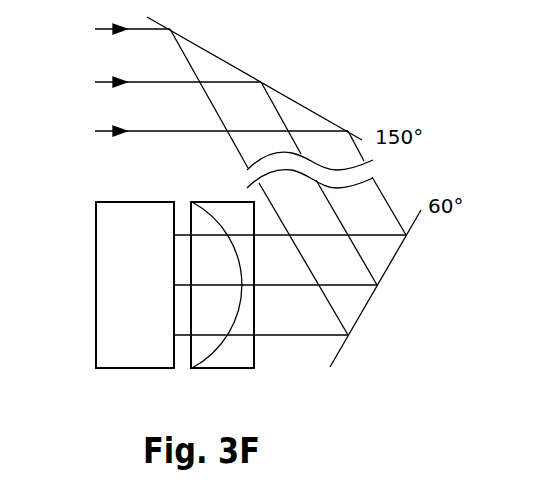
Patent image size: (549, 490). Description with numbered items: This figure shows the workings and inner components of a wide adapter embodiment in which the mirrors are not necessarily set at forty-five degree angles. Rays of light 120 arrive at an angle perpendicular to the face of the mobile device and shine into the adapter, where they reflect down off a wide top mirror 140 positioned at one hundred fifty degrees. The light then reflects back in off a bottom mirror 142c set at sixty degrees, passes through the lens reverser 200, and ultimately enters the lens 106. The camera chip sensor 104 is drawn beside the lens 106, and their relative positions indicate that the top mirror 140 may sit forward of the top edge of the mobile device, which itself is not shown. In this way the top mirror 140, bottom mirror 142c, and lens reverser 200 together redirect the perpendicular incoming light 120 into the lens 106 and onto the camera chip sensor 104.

The rays of light 120 is at (107, 28).
The wide top mirror 140 is at (303, 107).
The bottom mirror 142c is at (398, 250).
The camera chip sensor 104 is at (140, 200).
The lens reverser 200 is at (230, 200).
The lens 106 is at (189, 357).